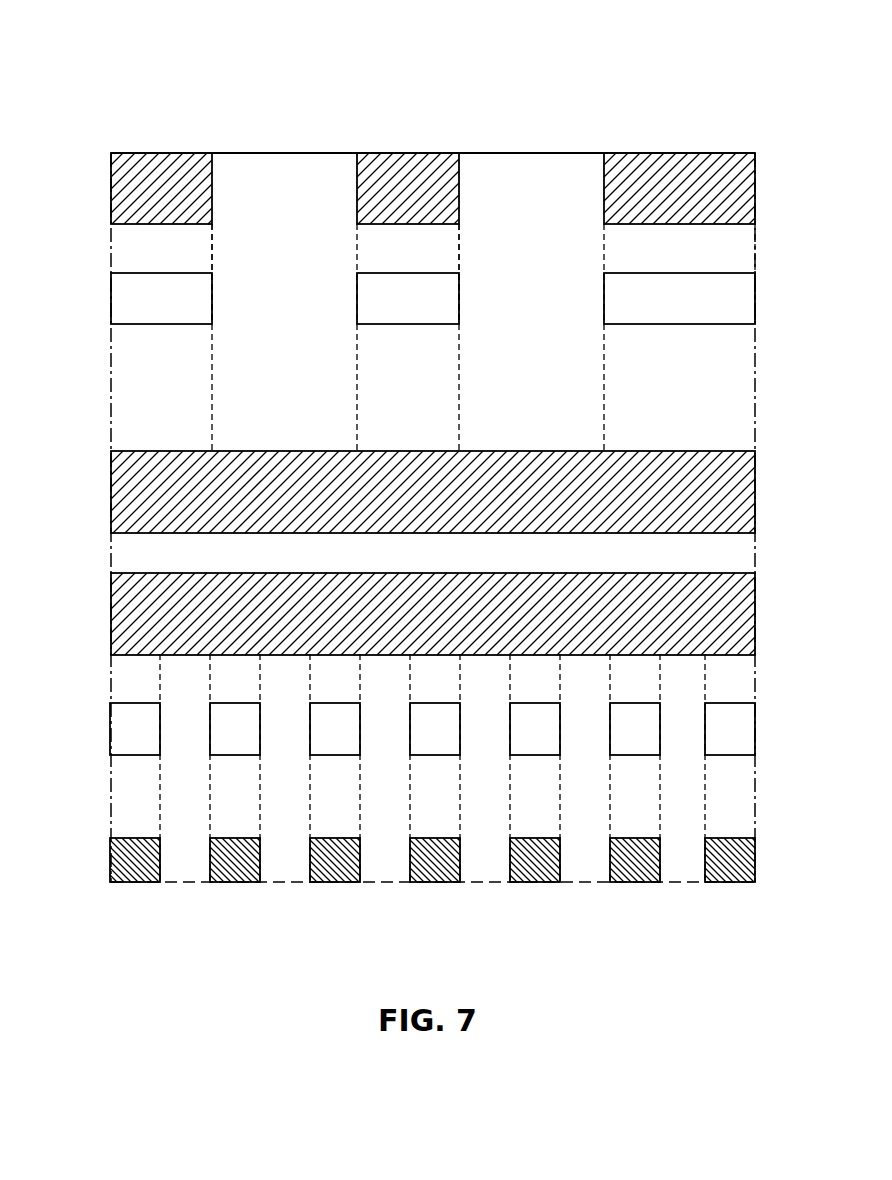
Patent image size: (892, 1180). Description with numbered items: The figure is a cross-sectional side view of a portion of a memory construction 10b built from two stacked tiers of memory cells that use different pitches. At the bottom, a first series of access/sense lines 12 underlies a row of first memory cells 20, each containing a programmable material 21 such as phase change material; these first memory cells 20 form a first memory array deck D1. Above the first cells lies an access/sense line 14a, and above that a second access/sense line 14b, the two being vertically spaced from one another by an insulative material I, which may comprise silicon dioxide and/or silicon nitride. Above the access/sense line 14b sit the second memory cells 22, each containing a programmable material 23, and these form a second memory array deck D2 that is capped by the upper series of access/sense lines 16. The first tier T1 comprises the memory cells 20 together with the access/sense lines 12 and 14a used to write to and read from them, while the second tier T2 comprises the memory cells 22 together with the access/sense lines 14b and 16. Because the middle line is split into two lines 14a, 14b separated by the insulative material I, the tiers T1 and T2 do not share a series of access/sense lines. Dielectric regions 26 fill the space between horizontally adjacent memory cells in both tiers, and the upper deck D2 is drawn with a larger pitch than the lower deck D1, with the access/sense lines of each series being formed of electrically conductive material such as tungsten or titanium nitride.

The construction 10b is at (754, 92).
The access/sense lines 16 is at (166, 138).
The second memory cells 22 is at (222, 284).
The programmable material 23 is at (170, 309).
The dielectric regions 26 is at (287, 361).
The access/sense line 14b is at (98, 493).
The access/sense line 14a is at (98, 616).
The first memory cells 20 is at (170, 722).
The programmable material 21 is at (120, 738).
The access/sense lines 12 is at (132, 896).
The first memory array deck D1 is at (78, 727).
The second memory array deck D2 is at (92, 299).
The first tier T1 is at (762, 573).
The second tier T2 is at (762, 534).
The insulative material I is at (757, 556).